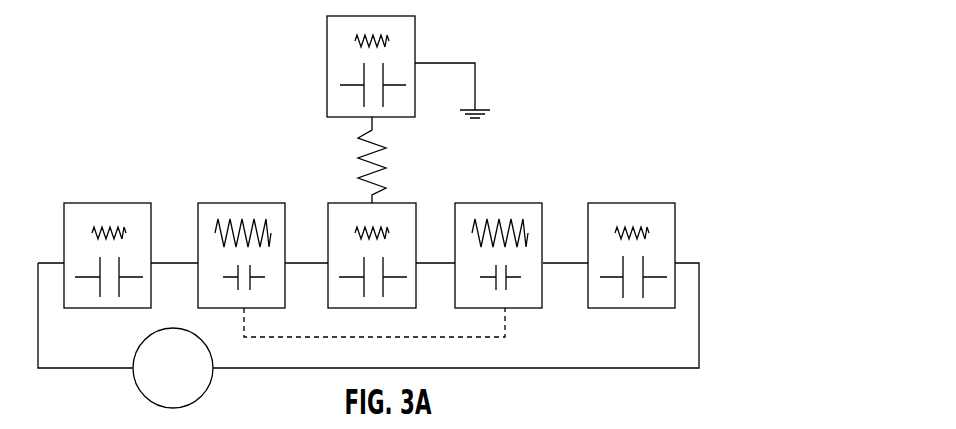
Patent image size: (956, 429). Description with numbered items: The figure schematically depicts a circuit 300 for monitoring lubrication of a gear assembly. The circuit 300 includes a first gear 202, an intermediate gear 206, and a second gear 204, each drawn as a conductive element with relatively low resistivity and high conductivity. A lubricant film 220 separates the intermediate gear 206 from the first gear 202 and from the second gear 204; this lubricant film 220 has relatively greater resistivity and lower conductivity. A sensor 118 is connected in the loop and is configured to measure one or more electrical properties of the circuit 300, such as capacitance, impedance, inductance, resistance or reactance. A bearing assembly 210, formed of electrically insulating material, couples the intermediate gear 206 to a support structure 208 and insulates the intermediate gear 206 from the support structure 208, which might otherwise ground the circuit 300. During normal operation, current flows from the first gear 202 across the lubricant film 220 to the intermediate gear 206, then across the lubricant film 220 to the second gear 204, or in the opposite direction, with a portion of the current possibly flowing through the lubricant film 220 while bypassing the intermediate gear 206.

The sensor 118 is at (159, 379).
The first gear 202 is at (118, 203).
The second gear 204 is at (650, 203).
The intermediate gear 206 is at (406, 203).
The support structure 208 is at (327, 66).
The bearing assembly 210 is at (343, 160).
The lubricant film 220 is at (245, 203).
The circuit 300 is at (566, 131).